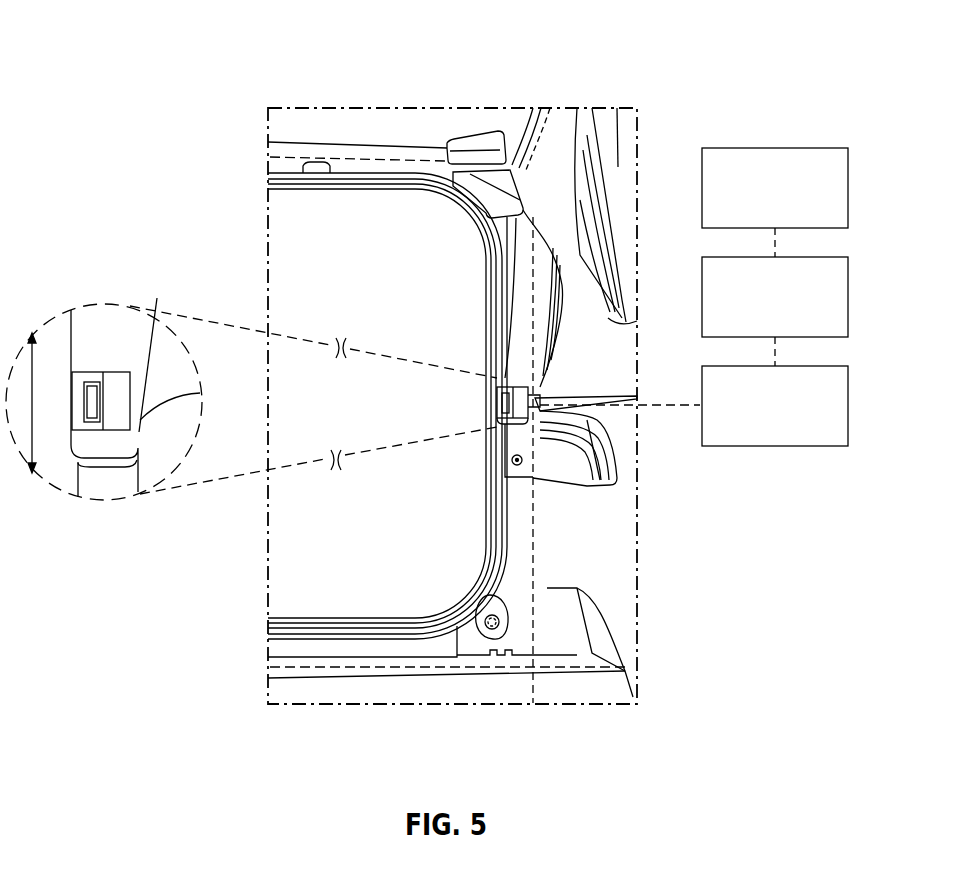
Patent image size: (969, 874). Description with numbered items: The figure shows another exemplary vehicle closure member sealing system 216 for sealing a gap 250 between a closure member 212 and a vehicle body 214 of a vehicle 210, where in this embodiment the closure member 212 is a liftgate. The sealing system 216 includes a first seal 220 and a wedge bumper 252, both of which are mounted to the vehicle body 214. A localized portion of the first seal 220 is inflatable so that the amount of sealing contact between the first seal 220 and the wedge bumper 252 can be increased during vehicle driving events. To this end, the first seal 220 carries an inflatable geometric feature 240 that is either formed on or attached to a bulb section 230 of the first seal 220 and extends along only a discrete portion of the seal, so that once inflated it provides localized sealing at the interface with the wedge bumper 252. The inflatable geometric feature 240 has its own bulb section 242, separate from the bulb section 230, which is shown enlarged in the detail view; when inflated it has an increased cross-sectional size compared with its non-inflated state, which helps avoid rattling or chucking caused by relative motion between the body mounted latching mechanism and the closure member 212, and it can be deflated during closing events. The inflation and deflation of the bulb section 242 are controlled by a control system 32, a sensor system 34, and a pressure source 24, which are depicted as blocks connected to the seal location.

The vehicle 210 is at (451, 98).
The closure member 212 is at (416, 667).
The vehicle body 214 is at (555, 172).
The sealing system 216 is at (530, 380).
The first seal 220 is at (478, 274).
The bulb section 230 is at (493, 547).
The inflatable geometric feature 240 is at (516, 374).
The bulb section 242 is at (513, 424).
The gap 250 is at (528, 424).
The wedge bumper 252 is at (522, 400).
The pressure source 24 is at (850, 406).
The control system 32 is at (850, 297).
The sensor system 34 is at (850, 188).